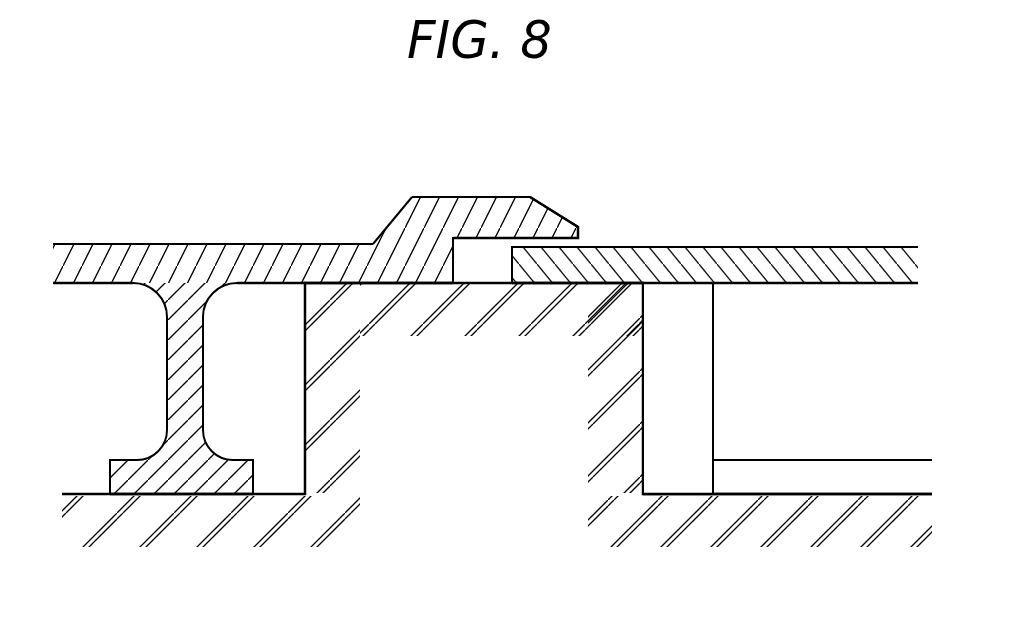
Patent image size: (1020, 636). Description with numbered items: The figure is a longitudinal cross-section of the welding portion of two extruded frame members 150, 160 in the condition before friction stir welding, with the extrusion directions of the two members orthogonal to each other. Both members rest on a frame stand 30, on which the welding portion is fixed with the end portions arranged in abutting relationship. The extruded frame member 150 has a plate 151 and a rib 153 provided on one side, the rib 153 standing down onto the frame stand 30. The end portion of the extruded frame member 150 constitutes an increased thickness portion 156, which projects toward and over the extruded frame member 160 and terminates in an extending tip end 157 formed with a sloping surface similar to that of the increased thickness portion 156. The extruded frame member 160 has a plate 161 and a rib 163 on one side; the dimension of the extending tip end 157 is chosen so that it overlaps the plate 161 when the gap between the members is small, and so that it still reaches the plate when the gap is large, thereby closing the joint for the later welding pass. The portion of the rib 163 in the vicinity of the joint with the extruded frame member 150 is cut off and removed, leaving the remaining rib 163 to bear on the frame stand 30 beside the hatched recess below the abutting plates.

The frame stand 30 is at (480, 462).
The extruded frame member 150 is at (189, 226).
The plate 151 is at (272, 245).
The rib 153 is at (183, 384).
The increased thickness portion 156 is at (395, 225).
The extending tip end 157 is at (482, 197).
The extruded frame member 160 is at (854, 209).
The plate 161 is at (778, 257).
The rib 163 is at (748, 378).